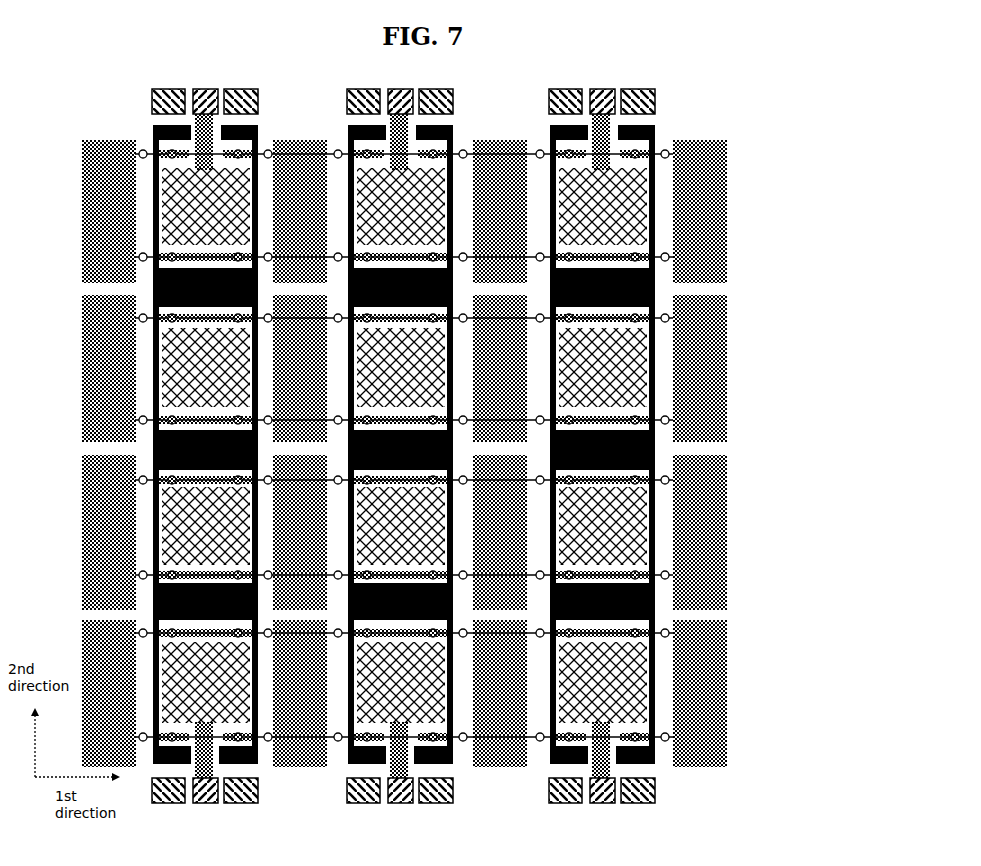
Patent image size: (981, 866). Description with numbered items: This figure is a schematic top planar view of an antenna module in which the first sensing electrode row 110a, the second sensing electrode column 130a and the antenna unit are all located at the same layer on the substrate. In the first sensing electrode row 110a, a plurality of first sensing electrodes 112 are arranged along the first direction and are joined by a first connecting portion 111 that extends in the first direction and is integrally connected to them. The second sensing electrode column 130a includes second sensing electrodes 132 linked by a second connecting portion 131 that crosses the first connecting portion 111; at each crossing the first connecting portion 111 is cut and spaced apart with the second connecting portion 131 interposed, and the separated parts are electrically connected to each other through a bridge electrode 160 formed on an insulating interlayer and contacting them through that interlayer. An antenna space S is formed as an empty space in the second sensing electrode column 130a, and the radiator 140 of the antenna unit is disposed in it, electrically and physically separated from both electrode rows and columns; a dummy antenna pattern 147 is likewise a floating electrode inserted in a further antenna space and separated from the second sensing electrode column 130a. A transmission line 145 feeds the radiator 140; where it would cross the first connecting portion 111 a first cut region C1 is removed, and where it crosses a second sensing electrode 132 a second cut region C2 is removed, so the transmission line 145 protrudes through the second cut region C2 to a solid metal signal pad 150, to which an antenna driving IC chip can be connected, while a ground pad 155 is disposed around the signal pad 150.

The first sensing electrode row 110a is at (738, 213).
The first connecting portion 111 is at (655, 203).
The first sensing electrode 112 is at (627, 250).
The second sensing electrode column 130a is at (663, 448).
The second connecting portion 131 is at (655, 523).
The second sensing electrode 132 is at (655, 593).
The radiator 140 is at (655, 683).
The transmission line 145 is at (655, 740).
The dummy antenna pattern 147 is at (162, 532).
The signal pad 150 is at (613, 750).
The ground pad 155 is at (657, 790).
The bridge electrode 160 is at (657, 315).
The antenna space S is at (648, 404).
The first cut region C1 is at (182, 728).
The second cut region C2 is at (186, 145).